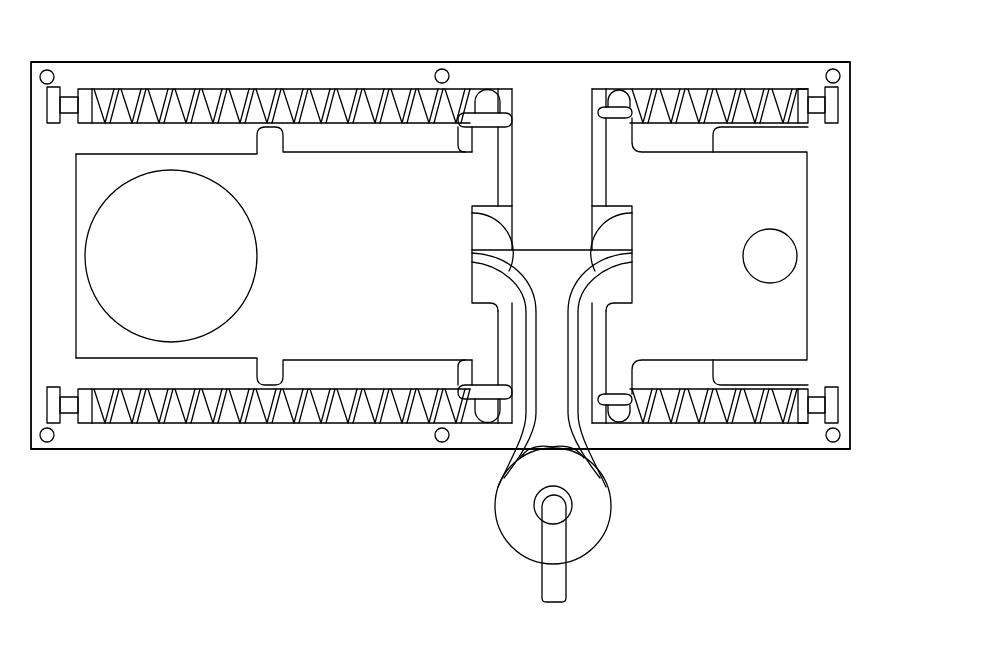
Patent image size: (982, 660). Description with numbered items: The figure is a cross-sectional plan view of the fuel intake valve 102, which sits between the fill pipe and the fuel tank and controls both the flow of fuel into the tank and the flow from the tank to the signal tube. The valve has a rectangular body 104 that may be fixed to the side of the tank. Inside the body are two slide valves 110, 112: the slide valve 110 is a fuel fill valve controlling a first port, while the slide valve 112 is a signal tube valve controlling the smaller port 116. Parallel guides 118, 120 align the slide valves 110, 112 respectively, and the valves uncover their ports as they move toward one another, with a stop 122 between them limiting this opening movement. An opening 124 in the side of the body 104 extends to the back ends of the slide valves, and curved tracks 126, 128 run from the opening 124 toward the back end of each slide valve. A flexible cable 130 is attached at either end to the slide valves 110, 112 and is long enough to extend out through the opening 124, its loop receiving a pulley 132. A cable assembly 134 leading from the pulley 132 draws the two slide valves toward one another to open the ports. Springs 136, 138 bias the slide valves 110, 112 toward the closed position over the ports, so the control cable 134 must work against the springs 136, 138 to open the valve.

The fuel intake valve 102 is at (498, 58).
The rectangular body 104 is at (772, 60).
The slide valve 110 is at (355, 152).
The slide valve 112 is at (668, 150).
The port 116 is at (773, 229).
The guide 118 is at (167, 142).
The guide 120 is at (778, 138).
The stop 122 is at (568, 230).
The opening 124 is at (498, 487).
The curved track 126 is at (471, 217).
The curved track 128 is at (633, 218).
The flexible cable 130 is at (570, 368).
The pulley 132 is at (592, 512).
The cable assembly 134 is at (567, 577).
The spring 136 is at (167, 413).
The spring 138 is at (748, 413).